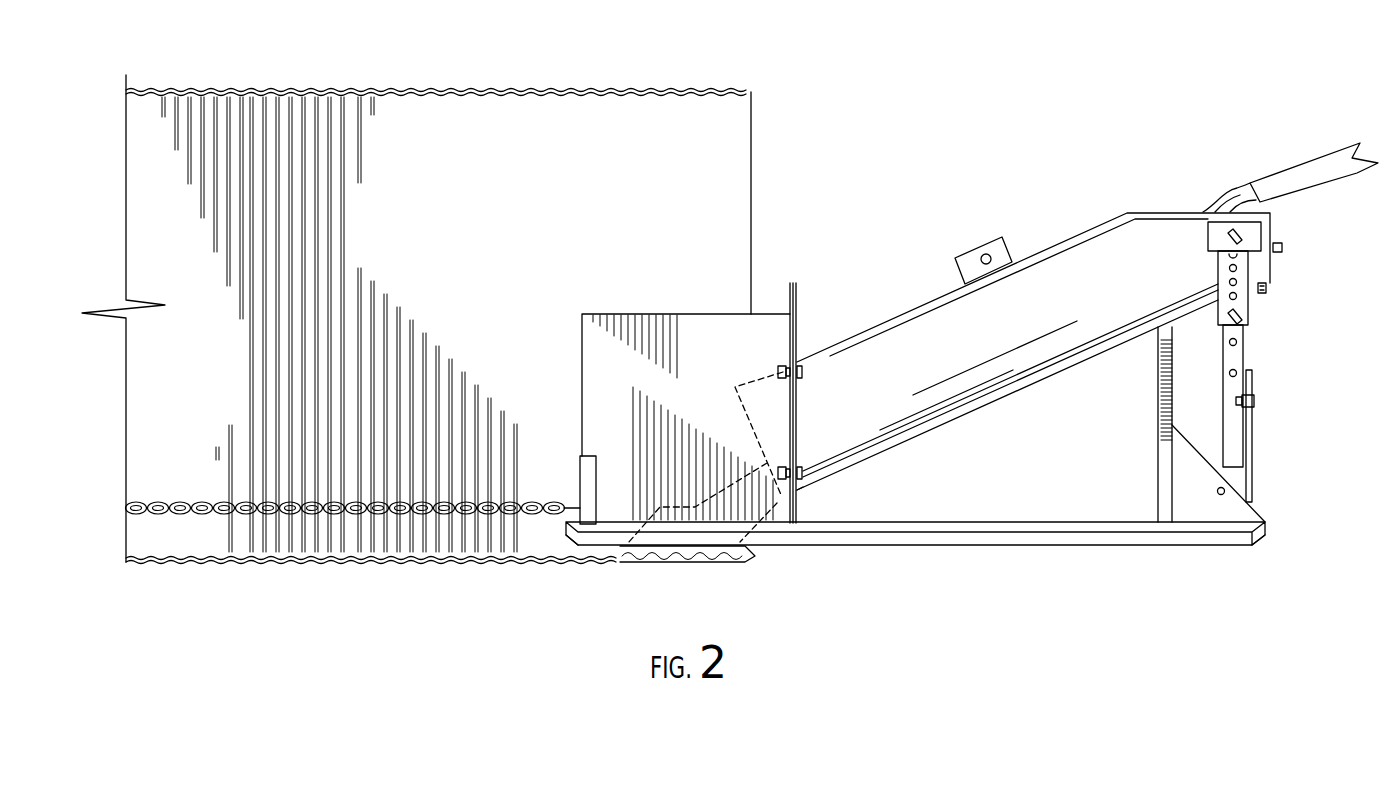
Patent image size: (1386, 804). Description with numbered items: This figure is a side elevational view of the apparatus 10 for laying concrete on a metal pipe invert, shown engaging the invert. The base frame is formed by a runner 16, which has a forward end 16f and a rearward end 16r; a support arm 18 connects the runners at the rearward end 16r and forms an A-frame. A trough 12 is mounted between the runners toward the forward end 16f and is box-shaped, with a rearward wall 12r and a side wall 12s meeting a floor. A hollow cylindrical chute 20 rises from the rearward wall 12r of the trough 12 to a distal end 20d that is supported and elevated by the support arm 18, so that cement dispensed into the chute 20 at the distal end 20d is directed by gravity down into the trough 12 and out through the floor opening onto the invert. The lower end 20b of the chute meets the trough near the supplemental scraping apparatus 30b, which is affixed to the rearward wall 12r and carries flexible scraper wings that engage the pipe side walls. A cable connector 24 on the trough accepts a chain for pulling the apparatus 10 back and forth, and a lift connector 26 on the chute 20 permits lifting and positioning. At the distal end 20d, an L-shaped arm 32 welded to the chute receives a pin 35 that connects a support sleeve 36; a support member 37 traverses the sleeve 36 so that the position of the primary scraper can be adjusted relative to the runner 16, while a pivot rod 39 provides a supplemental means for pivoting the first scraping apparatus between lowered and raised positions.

The apparatus 10 is at (1062, 195).
The trough 12 is at (678, 302).
The rearward wall 12r is at (797, 298).
The side wall 12s is at (723, 416).
The runner 16 is at (905, 522).
The forward end 16f is at (568, 530).
The rearward end 16r is at (1265, 530).
The support arm 18 is at (1160, 460).
The chute 20 is at (1105, 317).
The bottom end of rail 20b is at (808, 476).
The distal end 20d is at (1275, 210).
The cable connector 24 is at (573, 506).
The lift connector 26 is at (963, 262).
The supplemental scraping apparatus 30b is at (805, 402).
The L-shaped arm 32 is at (1250, 232).
The pin 35 is at (1247, 318).
The support sleeve 36 is at (1243, 278).
The support member 37 is at (1233, 438).
The pivot rod 39 is at (1267, 286).